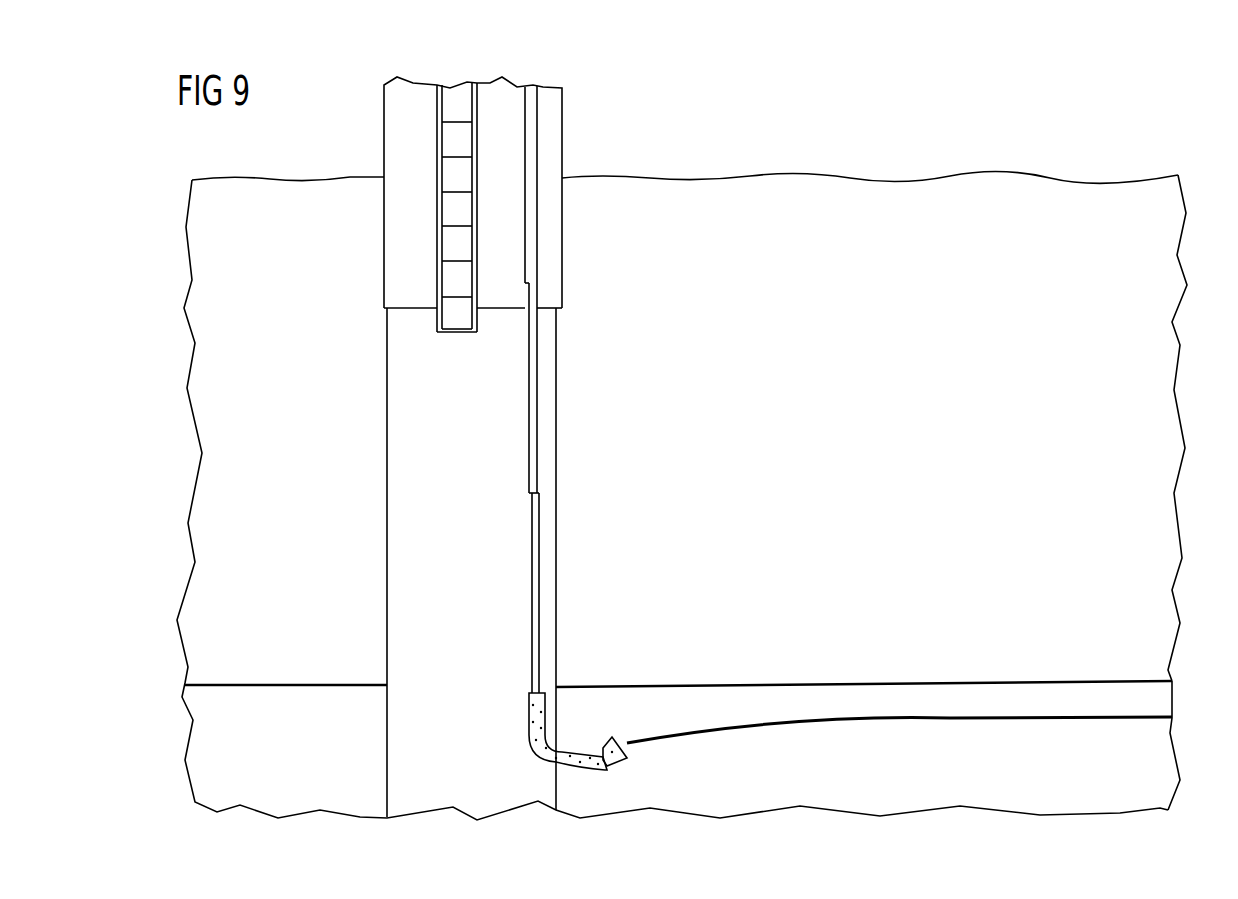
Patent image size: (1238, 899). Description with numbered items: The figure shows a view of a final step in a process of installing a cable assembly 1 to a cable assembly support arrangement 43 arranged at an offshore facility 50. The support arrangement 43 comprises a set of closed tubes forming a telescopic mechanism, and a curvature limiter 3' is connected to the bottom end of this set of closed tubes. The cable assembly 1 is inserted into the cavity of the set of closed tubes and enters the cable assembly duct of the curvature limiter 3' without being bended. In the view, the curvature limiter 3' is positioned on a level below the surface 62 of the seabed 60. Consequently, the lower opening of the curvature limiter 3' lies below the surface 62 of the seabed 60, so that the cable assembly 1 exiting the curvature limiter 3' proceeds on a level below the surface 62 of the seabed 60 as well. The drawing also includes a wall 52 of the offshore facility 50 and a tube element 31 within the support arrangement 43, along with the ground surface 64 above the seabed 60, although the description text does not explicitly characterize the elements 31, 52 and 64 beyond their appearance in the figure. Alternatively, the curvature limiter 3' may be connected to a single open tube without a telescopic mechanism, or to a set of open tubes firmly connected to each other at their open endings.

The cable assembly 1 is at (908, 722).
The curvature limiter 3' is at (578, 731).
The guide pipe 31 is at (530, 231).
The cable assembly support arrangement 43 is at (591, 387).
The offshore facility 50 is at (332, 536).
The shaft wall 52 is at (395, 492).
The seabed 60 is at (1167, 767).
The surface of the seabed 62 is at (1115, 680).
The ground surface 64 is at (1147, 172).